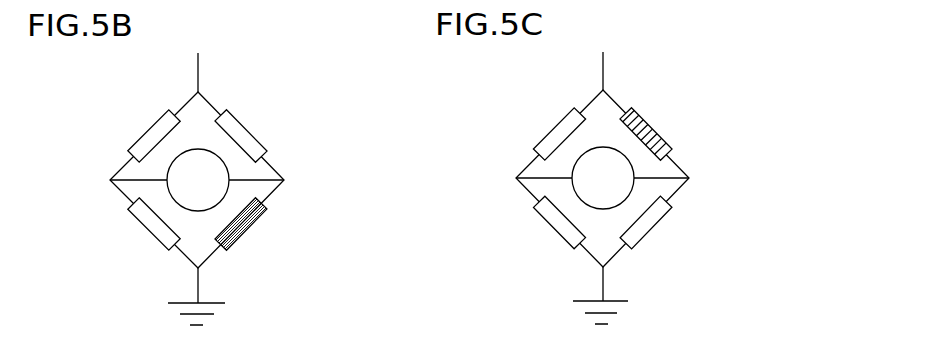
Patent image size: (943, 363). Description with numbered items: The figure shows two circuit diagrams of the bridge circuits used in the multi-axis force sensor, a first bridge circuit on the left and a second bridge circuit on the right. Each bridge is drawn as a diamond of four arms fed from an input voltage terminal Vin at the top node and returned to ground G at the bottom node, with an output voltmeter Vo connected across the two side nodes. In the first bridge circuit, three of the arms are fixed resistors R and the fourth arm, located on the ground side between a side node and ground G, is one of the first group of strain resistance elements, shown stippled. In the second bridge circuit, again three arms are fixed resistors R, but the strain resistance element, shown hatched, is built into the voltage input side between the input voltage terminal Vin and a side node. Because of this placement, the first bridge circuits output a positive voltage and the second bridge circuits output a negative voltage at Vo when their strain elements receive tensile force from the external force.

In FIG. 5B, the fixed resistor R is at (148, 130).
In FIG. 5C, the fixed resistor R is at (553, 127).
In FIG. 5B, the input voltage terminal Vin is at (198, 51).
In FIG. 5C, the input voltage terminal Vin is at (603, 50).
In FIG. 5B, the output voltage (voltmeter) Vo is at (198, 180).
In FIG. 5C, the output voltage (voltmeter) Vo is at (603, 178).
In FIG. 5B, the ground G is at (191, 307).
In FIG. 5C, the ground G is at (595, 306).